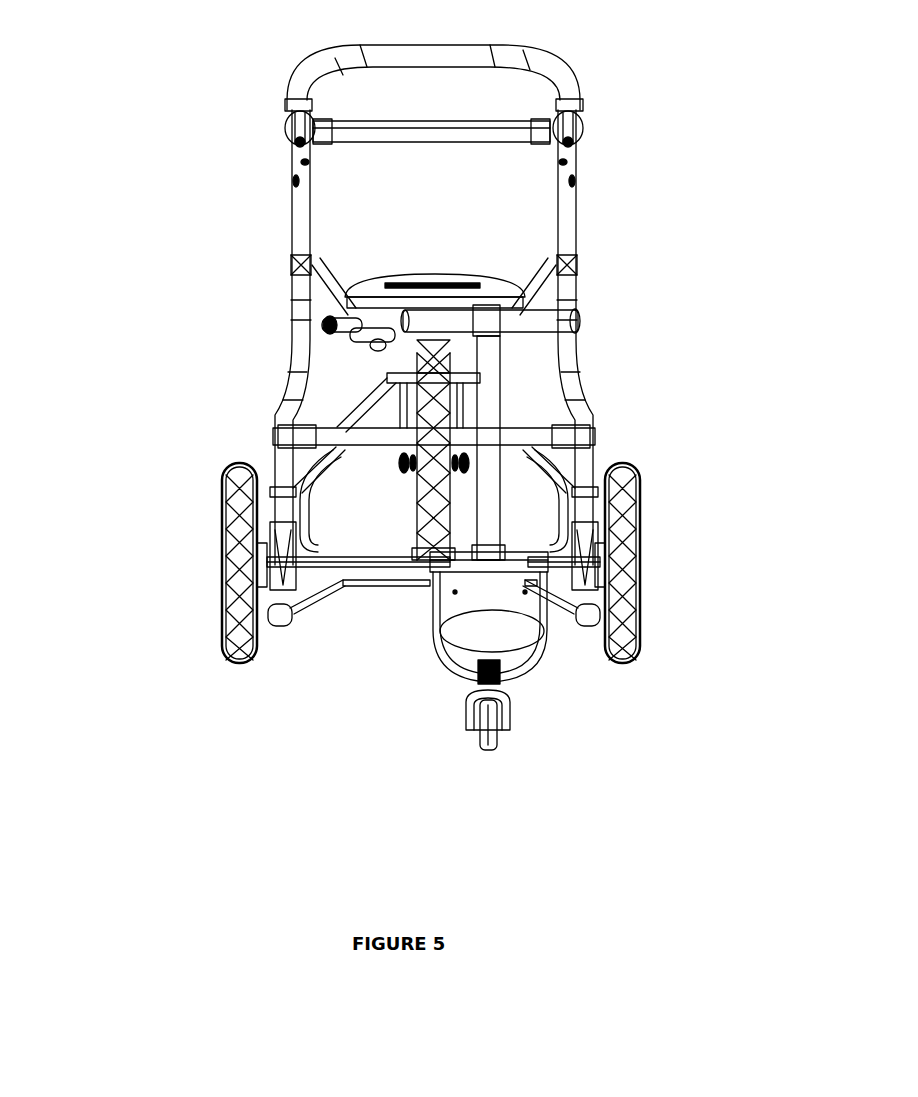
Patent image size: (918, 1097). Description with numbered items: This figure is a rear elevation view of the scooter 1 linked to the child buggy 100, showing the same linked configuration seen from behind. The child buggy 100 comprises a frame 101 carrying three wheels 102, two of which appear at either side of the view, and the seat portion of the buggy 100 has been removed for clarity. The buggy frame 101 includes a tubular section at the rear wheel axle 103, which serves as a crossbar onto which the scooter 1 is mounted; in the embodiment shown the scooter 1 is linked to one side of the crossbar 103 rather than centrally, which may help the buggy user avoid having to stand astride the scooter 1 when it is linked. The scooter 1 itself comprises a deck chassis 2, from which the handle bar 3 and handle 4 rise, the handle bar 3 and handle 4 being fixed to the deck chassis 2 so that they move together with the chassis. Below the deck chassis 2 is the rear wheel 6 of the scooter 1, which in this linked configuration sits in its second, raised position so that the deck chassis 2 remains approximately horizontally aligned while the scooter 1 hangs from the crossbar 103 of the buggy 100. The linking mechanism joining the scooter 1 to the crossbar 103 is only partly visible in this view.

The child buggy 100 is at (353, 335).
The frame 101 is at (302, 342).
The wheels 102 is at (388, 460).
The rear wheel axle 103 is at (363, 568).
The scooter 1 is at (433, 573).
The deck chassis 2 is at (520, 640).
The handle bar 3 is at (490, 403).
The handle 4 is at (575, 312).
The rear wheel 6 is at (493, 747).